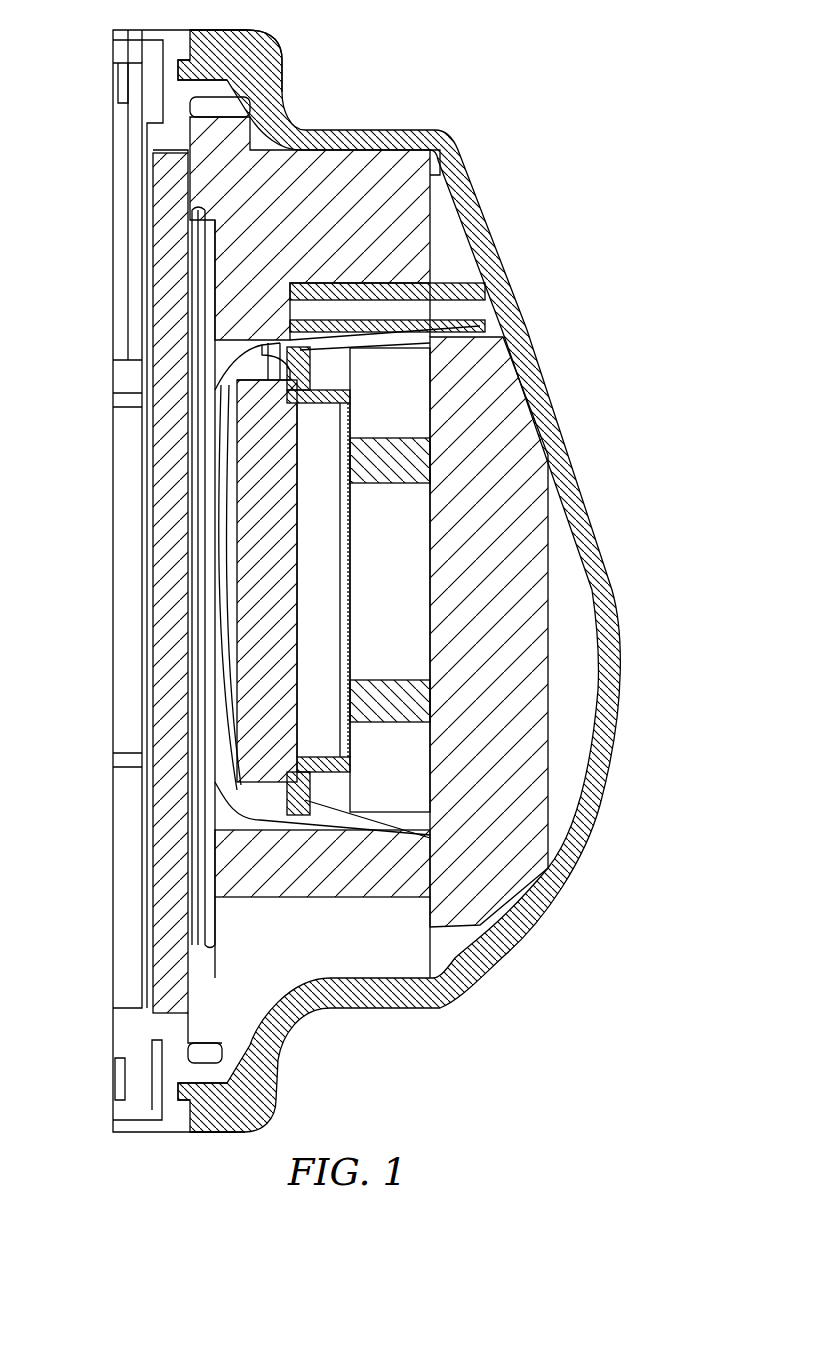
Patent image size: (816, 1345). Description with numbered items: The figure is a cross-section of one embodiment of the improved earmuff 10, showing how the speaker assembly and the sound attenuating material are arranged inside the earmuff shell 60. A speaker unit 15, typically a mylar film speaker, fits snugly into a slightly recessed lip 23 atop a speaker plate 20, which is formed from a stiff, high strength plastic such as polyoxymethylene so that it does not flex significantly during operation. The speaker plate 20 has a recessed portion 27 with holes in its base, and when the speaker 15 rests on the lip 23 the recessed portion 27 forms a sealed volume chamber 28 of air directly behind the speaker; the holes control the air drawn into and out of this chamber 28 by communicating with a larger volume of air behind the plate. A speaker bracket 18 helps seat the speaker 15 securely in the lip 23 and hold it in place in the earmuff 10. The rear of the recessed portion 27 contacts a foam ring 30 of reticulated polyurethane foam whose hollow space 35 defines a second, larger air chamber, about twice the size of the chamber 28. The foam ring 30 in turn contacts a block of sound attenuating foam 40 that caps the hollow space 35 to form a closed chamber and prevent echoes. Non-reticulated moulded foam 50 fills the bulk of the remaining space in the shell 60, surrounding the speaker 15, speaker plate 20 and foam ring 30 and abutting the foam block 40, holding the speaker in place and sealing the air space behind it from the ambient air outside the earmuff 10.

The earmuff 10 is at (400, 1040).
The speaker unit 15 is at (283, 606).
The speaker bracket 18 is at (252, 341).
The speaker plate 20 is at (338, 467).
The lip 23 is at (290, 400).
The recessed portion 27 is at (314, 752).
The chamber 28 is at (310, 672).
The foam ring 30 is at (470, 718).
The hollow space 35 is at (404, 589).
The sound attenuating foam 40 is at (503, 627).
The moulded foam 50 is at (330, 236).
The shell 60 is at (260, 58).